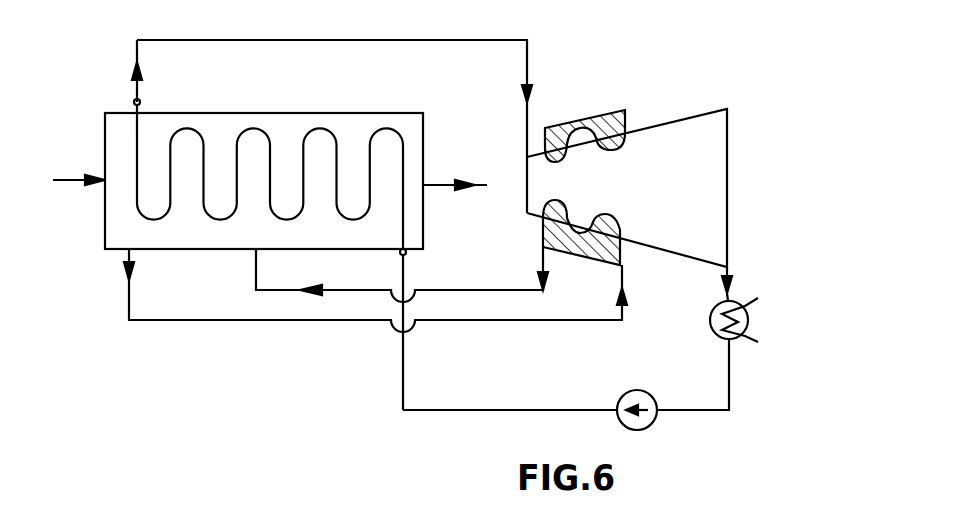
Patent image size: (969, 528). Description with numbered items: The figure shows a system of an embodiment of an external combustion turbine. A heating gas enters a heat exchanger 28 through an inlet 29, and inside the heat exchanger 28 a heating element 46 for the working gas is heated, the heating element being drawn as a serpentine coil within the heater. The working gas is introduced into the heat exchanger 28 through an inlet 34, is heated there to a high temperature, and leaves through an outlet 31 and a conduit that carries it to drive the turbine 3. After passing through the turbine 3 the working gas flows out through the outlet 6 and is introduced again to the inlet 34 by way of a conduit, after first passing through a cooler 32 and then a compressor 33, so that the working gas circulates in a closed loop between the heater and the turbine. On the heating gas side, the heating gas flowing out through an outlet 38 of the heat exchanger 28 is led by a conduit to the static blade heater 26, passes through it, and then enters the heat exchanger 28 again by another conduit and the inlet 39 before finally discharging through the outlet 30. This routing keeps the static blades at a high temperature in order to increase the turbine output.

The turbine 3 is at (667, 124).
The outlet 6 is at (729, 268).
The static blade heater 26 is at (578, 127).
The heat exchanger 28 is at (328, 113).
The inlet 29 is at (72, 183).
The outlet 30 is at (444, 183).
The outlet 31 is at (134, 100).
The cooler 32 is at (711, 324).
The compressor 33 is at (618, 398).
The inlet 34 is at (408, 253).
The outlet 38 is at (129, 292).
The inlet 39 is at (256, 270).
The heating element 46 is at (207, 138).